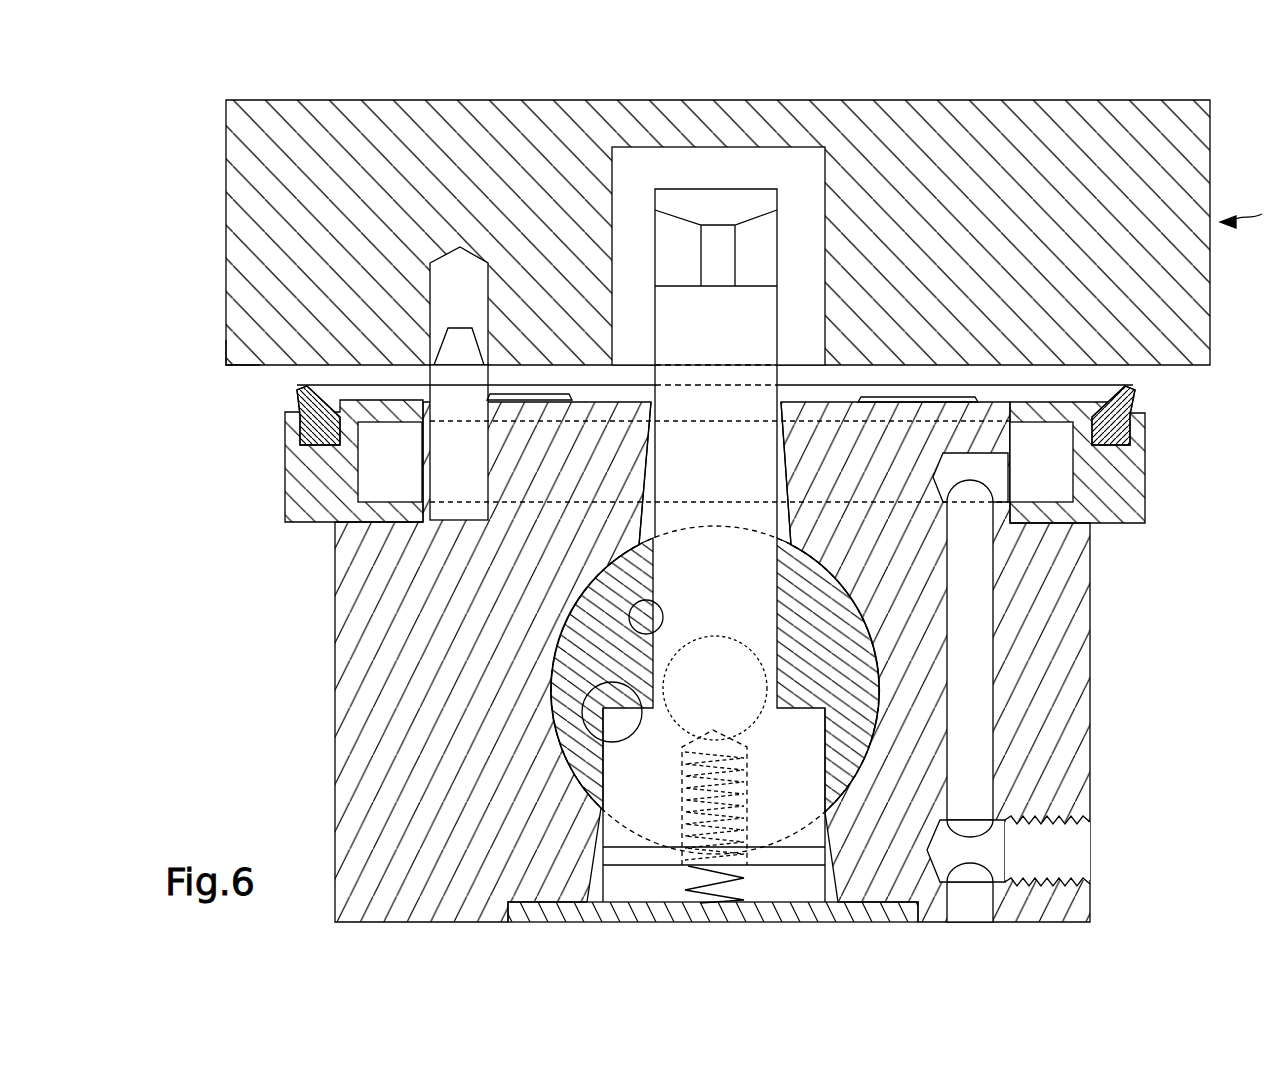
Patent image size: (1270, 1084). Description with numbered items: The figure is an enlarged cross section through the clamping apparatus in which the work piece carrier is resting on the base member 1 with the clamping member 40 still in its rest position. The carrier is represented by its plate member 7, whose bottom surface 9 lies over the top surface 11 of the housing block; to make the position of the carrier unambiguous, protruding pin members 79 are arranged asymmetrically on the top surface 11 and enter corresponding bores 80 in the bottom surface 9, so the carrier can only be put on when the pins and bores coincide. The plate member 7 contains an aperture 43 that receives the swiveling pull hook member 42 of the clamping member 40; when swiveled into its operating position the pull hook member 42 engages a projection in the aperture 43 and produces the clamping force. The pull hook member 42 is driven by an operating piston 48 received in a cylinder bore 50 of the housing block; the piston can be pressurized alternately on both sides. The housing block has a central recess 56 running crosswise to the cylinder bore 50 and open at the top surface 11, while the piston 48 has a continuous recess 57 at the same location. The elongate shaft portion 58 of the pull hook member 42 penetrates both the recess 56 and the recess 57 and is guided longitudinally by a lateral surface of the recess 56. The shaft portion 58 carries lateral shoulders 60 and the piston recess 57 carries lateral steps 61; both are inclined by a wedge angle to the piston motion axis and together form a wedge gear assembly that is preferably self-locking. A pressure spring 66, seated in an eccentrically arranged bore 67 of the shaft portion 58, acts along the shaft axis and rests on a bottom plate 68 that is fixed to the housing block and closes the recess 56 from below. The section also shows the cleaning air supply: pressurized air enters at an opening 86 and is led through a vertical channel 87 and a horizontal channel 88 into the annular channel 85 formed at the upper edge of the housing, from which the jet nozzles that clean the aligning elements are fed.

The base member 1 is at (1140, 700).
The plate member 7 is at (1190, 152).
The bottom surface 9 is at (276, 366).
The top surface 11 is at (368, 390).
The clamping member 40 is at (690, 672).
The pull hook member 42 is at (720, 233).
The aperture 43 is at (807, 170).
The operating piston 48 is at (583, 755).
The cylinder bore 50 is at (707, 530).
The central recess 56 is at (633, 520).
The recess 57 is at (640, 600).
The shaft portion 58 is at (675, 337).
The lateral shoulder 60 is at (608, 683).
The lateral step 61 is at (640, 732).
The pressure spring 66 is at (713, 893).
The eccentrically arranged bore 67 is at (748, 800).
The bottom plate 68 is at (633, 882).
The pin member 79 is at (457, 454).
The bore 80 is at (465, 290).
The annular channel 85 is at (393, 485).
The opening 86 is at (1063, 852).
The vertical channel 87 is at (980, 606).
The horizontal channel 88 is at (997, 479).